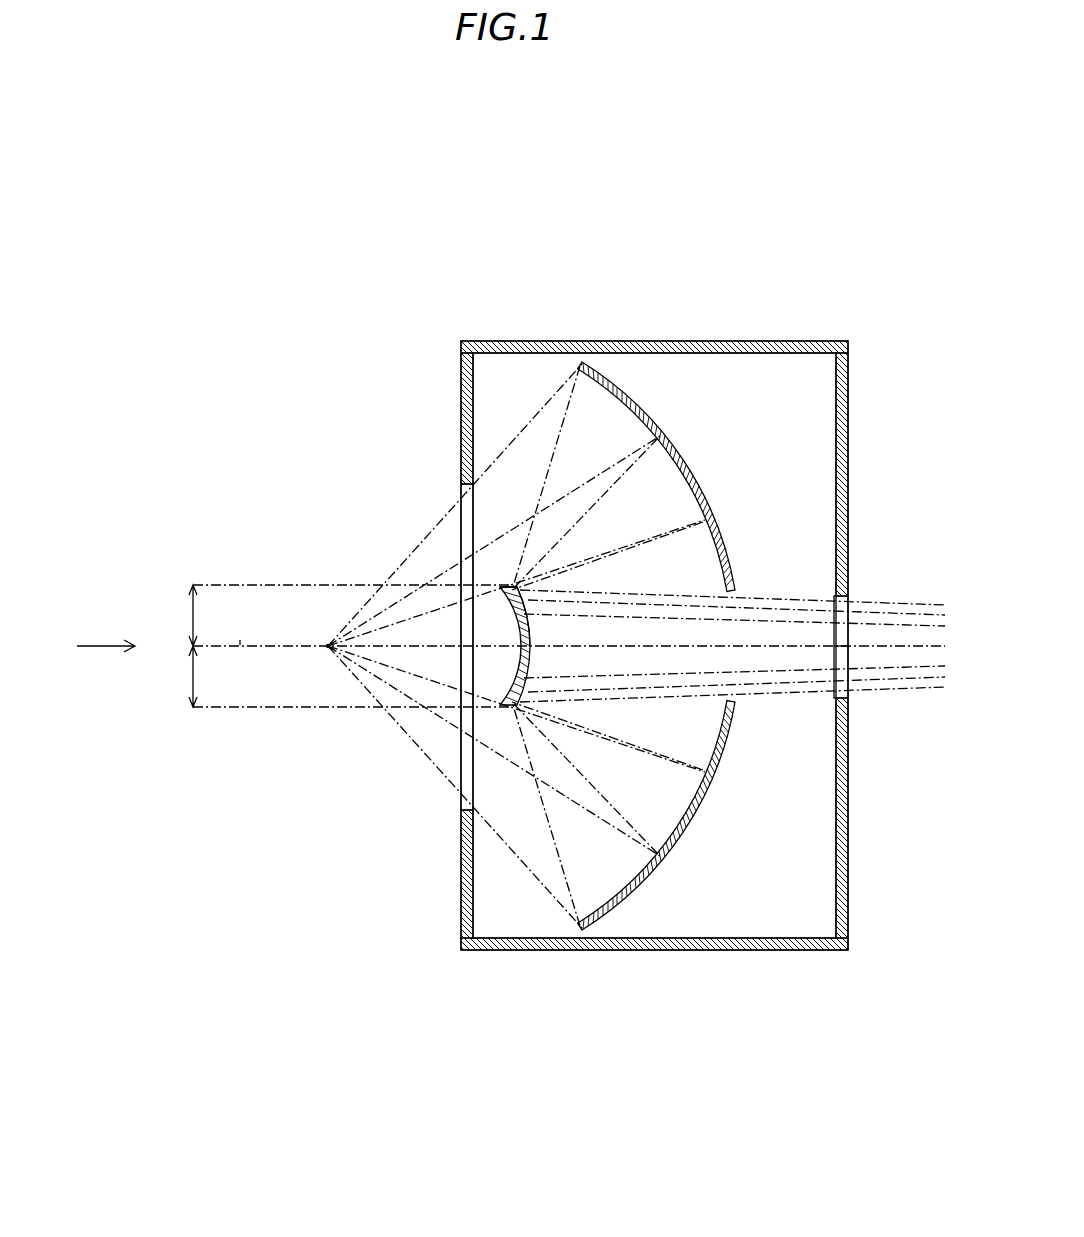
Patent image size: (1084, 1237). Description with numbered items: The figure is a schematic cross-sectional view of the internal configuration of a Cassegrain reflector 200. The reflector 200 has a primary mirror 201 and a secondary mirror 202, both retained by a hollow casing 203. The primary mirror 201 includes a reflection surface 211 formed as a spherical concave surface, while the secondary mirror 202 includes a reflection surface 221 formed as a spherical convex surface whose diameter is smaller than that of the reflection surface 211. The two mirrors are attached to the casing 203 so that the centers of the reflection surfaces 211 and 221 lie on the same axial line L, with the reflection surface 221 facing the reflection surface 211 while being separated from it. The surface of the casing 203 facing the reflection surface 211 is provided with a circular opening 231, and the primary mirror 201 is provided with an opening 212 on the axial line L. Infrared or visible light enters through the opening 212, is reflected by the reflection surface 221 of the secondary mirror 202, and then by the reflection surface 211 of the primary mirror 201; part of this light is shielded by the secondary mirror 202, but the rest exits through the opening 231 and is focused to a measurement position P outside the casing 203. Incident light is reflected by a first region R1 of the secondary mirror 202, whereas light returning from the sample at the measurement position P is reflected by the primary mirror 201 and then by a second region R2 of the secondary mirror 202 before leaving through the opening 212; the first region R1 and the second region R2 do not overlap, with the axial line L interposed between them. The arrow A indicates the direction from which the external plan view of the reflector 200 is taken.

The Cassegrain reflector 200 is at (786, 240).
The primary mirror 201 is at (636, 398).
The reflection surface 211 is at (686, 815).
The opening 212 is at (736, 600).
The opening 231 is at (465, 773).
The secondary mirror 202 is at (507, 702).
The reflection surface 221 is at (512, 588).
The casing 203 is at (700, 951).
The axial line L is at (240, 645).
The measurement position P is at (328, 645).
The arrow A is at (96, 646).
The first region R1 is at (173, 615).
The second region R2 is at (173, 676).